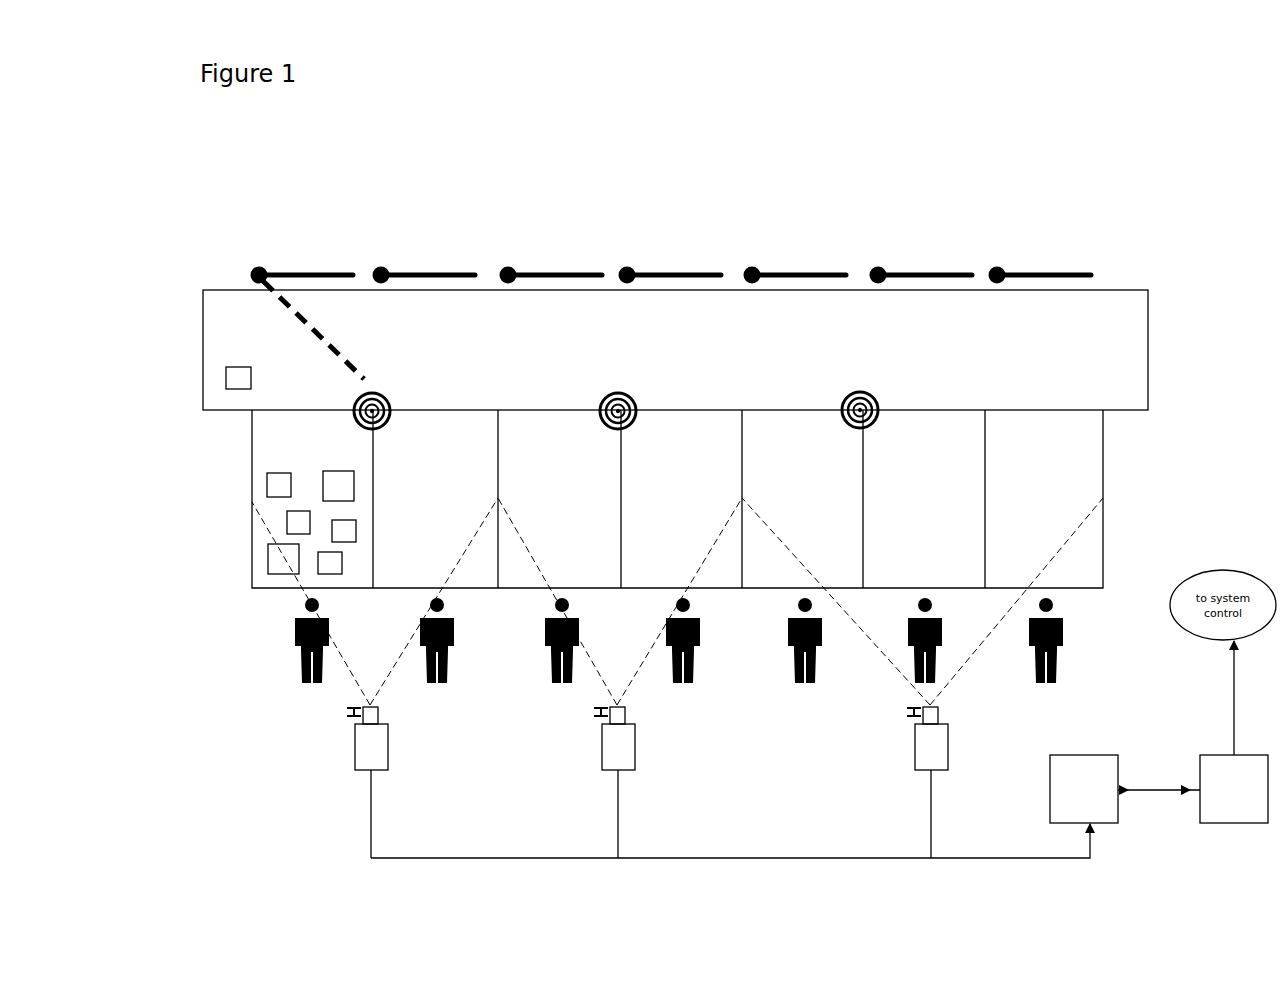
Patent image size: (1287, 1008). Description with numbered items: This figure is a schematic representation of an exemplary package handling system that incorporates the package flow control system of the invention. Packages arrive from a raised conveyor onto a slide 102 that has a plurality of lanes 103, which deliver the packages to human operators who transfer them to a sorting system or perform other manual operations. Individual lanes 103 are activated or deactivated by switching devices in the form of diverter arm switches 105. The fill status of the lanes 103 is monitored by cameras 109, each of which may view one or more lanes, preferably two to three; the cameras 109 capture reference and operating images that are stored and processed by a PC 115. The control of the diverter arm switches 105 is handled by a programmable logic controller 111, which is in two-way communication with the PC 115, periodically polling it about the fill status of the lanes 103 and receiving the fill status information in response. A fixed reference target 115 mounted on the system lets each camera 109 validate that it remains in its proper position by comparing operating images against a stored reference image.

The slide 102 is at (252, 547).
The lanes 103 is at (282, 455).
The diverter arm switches 105 is at (259, 268).
The camera 109 is at (355, 748).
The programmable logic controller 111 is at (1200, 755).
The PC 115 is at (372, 392).